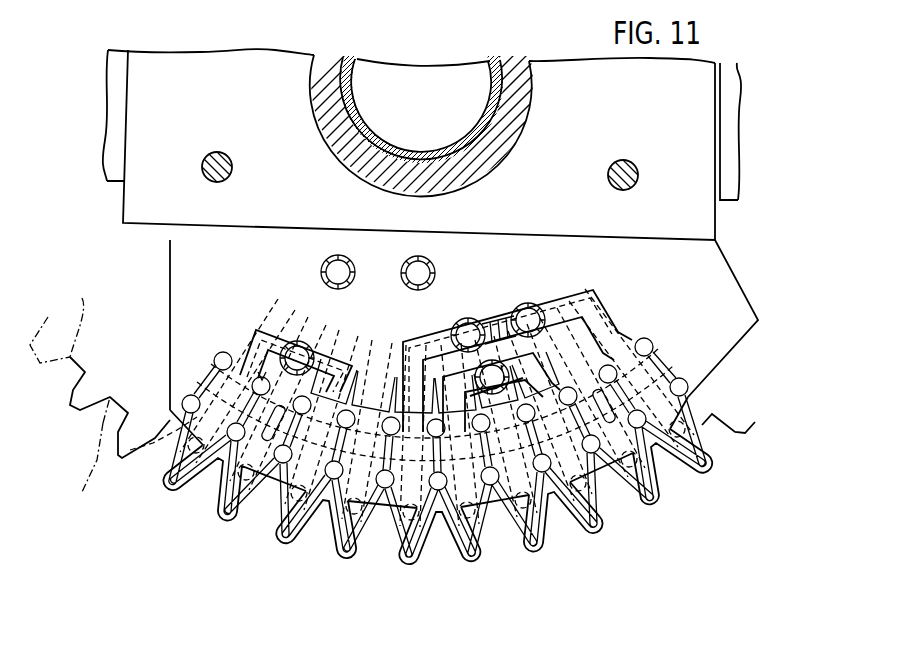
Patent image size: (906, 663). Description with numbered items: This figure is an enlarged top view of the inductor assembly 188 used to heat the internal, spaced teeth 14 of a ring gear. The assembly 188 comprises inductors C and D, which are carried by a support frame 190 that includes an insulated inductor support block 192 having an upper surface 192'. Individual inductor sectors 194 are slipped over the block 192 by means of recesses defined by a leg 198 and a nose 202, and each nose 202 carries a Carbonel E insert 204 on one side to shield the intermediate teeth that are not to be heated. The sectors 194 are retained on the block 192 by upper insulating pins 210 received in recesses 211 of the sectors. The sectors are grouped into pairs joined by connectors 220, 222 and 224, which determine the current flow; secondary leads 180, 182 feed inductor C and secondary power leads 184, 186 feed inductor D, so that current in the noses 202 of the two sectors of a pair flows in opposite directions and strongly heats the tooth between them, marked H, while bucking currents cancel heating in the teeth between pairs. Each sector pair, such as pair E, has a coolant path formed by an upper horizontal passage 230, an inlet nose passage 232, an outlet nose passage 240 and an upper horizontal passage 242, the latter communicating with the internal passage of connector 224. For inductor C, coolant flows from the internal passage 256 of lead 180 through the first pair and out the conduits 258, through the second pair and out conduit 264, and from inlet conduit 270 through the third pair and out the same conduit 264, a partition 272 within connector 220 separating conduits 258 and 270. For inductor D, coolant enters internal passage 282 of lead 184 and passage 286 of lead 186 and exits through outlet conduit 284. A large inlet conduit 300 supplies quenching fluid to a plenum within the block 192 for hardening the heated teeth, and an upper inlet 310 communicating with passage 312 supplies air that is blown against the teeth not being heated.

The spaced teeth 14 is at (100, 406).
The secondary lead 180 is at (513, 420).
The secondary lead 182 is at (665, 345).
The secondary power lead 184 is at (362, 402).
The secondary power lead 186 is at (313, 390).
The inductor assembly 188 is at (500, 612).
The support frame 190 is at (705, 173).
The inductor support block 192 is at (758, 336).
The upper surface 192' is at (751, 251).
The inductor sectors 194 is at (180, 492).
The leg 198 is at (217, 383).
The nose 202 is at (357, 545).
The Carbonel E insert 204 is at (275, 518).
The upper insulating pins 210 is at (222, 352).
The recesses 211 is at (262, 378).
The connector 220 is at (594, 268).
The connector 222 is at (533, 355).
The connector 224 is at (272, 362).
The upper horizontal passage 230 is at (180, 423).
The inlet nose passage 232 is at (243, 498).
The outlet nose passage 240 is at (170, 468).
The upper horizontal passage 242 is at (250, 345).
The internal passage 256 is at (666, 375).
The conduits 258 is at (514, 306).
The conduit 264 is at (490, 360).
The inlet conduit 270 is at (462, 318).
The partition 272 is at (524, 304).
The internal passage 282 is at (372, 418).
The outlet conduit 284 is at (302, 346).
The passage 286 is at (258, 412).
The inlet conduit 300 is at (492, 122).
The upper inlet 310 is at (418, 257).
The passage 312 is at (410, 297).